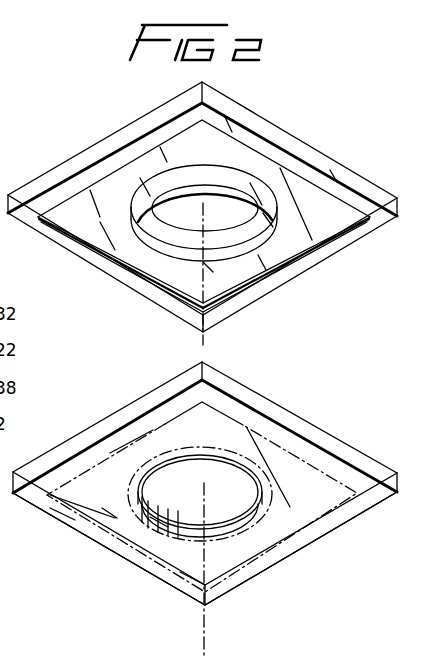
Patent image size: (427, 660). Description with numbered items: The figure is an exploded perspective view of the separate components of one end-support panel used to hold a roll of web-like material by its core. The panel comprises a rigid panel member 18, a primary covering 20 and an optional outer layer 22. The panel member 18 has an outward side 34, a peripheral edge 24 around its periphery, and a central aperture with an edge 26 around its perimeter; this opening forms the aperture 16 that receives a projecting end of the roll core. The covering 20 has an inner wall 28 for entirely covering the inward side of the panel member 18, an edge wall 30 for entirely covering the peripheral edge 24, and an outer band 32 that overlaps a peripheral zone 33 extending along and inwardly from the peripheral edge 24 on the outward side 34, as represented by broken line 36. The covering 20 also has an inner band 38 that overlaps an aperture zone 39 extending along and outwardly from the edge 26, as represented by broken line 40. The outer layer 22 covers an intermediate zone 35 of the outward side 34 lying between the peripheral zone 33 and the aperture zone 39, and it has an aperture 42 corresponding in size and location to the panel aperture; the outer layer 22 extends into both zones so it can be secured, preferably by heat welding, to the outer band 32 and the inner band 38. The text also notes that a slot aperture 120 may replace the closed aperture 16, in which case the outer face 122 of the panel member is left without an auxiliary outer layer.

The aperture 16 is at (188, 205).
The rigid panel member 18 is at (274, 397).
The primary covering 20 is at (85, 143).
The outer layer 22 is at (300, 437).
The peripheral edge 24 is at (125, 408).
The edge of central aperture 26 is at (187, 515).
The inner wall 28 is at (230, 153).
The edge wall 30 is at (337, 168).
The outer band 32 is at (327, 258).
The peripheral zone 33 is at (50, 508).
The outward side 34 is at (250, 572).
The intermediate zone 35 is at (102, 508).
The broken line 36 is at (180, 572).
The inner band 38 is at (272, 222).
The aperture zone 39 is at (150, 517).
The broken line 40 is at (277, 492).
The aperture of outer layer 42 is at (227, 527).
The slot aperture 120 is at (322, 522).
The outer face 122 is at (143, 467).